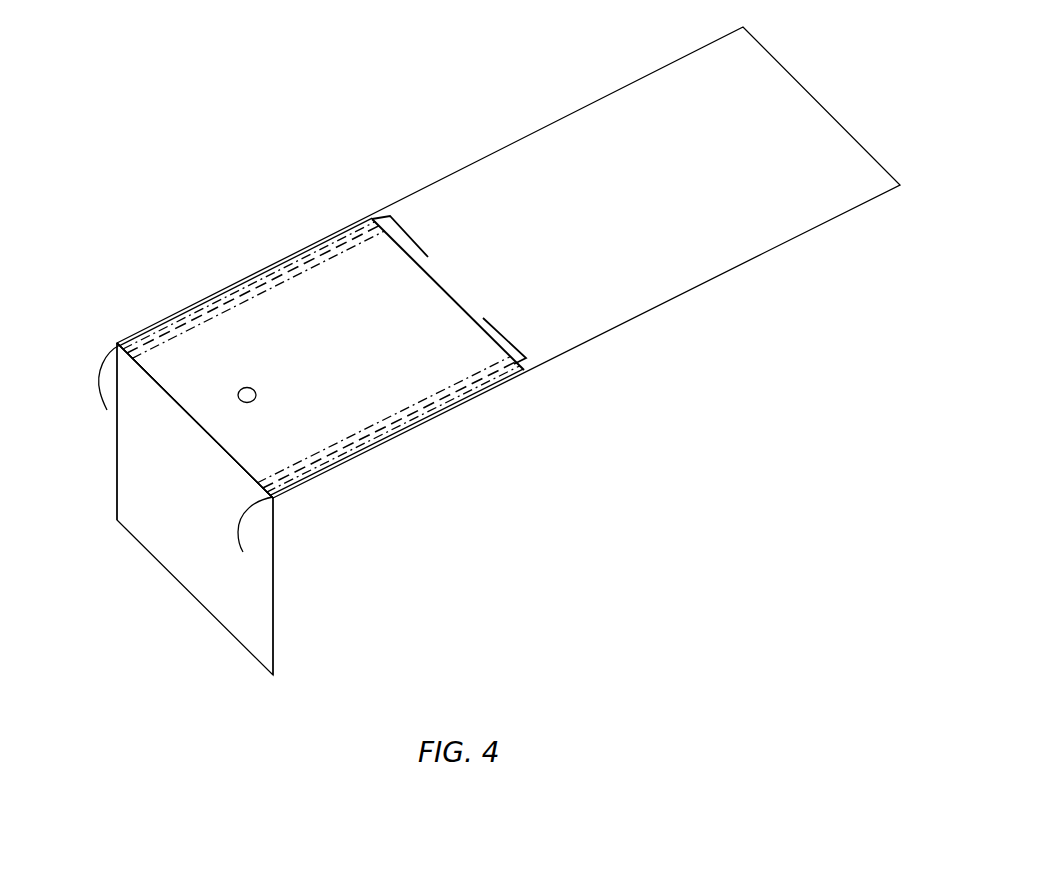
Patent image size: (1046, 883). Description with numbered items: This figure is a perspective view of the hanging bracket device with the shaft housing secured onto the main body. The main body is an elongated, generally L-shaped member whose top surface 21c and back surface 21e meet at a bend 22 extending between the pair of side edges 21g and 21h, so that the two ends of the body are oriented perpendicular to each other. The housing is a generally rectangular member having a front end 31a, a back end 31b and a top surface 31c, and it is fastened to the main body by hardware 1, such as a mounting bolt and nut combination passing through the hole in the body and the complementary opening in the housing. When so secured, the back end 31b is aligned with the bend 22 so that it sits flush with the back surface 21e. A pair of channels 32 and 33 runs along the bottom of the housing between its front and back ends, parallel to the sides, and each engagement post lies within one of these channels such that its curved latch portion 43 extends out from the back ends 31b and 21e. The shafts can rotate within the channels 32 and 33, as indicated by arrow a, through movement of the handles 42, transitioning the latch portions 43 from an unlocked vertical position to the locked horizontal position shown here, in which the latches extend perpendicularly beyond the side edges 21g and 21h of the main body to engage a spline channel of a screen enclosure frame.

The hardware 1 is at (250, 387).
The top surface 21c is at (700, 182).
The back surface 21e is at (210, 514).
The side edge 21g is at (273, 640).
The side edge 21h is at (116, 486).
The bend 22 is at (183, 398).
The front end 31a is at (450, 297).
The back end 31b is at (182, 400).
The top surface 31c is at (383, 348).
The channel 32 is at (437, 400).
The channel 33 is at (320, 264).
The handle 42 is at (423, 252).
The curved latch portion 43 is at (103, 381).
The arrow a is at (400, 217).